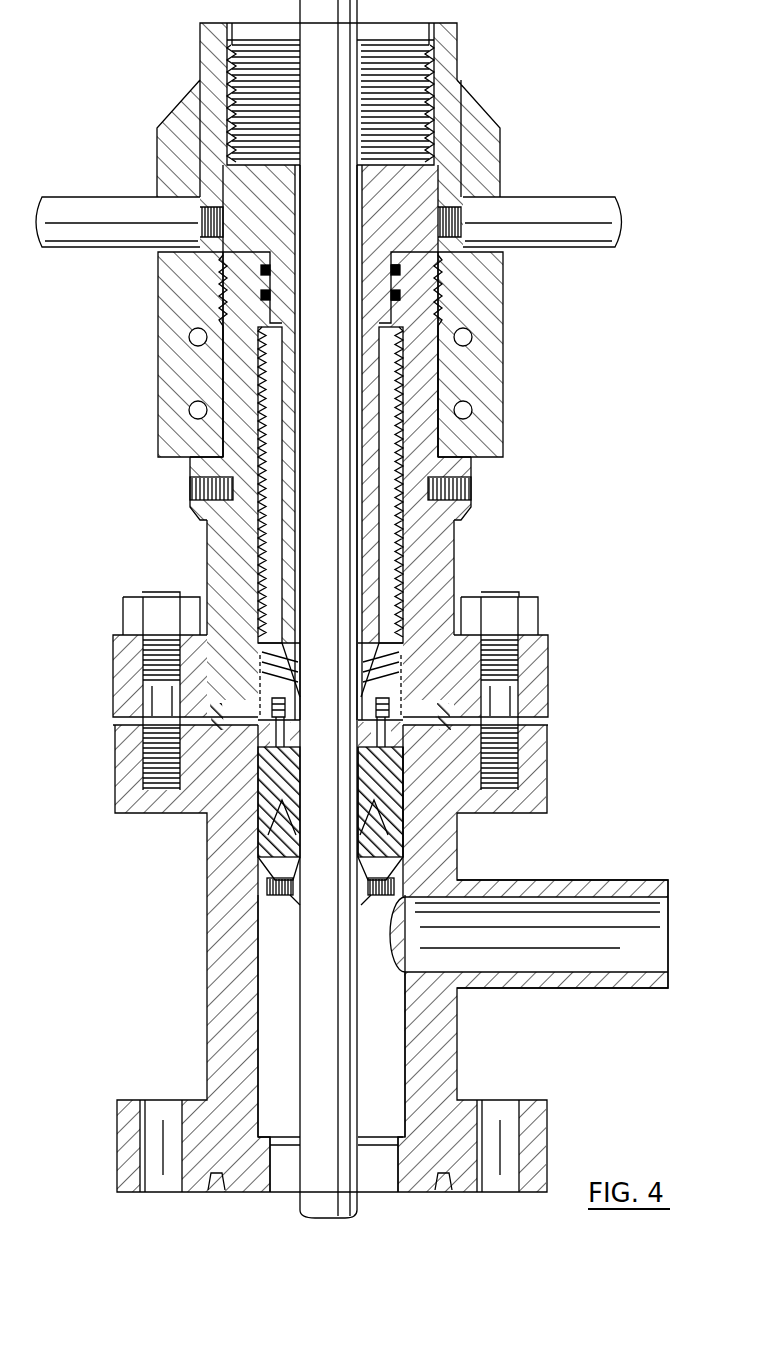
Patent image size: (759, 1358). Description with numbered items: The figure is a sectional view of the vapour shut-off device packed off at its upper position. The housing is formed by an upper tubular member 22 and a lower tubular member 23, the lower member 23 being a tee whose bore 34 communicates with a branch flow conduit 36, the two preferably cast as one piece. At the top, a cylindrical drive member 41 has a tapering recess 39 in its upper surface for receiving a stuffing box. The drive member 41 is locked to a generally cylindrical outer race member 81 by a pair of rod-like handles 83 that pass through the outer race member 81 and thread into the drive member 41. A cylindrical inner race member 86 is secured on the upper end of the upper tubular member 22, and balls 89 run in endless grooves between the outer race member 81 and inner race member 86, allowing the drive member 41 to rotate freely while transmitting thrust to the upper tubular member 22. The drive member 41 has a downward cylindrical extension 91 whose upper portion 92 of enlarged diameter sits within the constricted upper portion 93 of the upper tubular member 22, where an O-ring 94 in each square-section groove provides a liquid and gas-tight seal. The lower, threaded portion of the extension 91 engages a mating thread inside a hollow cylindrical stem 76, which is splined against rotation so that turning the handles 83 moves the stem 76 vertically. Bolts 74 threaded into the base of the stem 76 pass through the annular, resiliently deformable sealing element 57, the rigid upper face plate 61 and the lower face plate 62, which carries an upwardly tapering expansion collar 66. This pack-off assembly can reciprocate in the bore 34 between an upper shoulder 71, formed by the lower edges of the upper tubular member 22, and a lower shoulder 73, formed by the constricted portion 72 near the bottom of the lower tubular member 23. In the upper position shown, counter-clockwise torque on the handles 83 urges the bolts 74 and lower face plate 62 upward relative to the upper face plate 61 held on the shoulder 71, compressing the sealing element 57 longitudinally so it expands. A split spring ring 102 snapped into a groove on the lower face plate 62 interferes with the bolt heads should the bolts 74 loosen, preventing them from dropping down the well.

The upper tubular member 22 is at (226, 540).
The lower tubular member 23 is at (214, 976).
The bore 34 is at (276, 1022).
The flow conduit 36 is at (572, 882).
The tapering recess 39 is at (428, 58).
The drive member 41 is at (440, 68).
The sealing element 57 is at (403, 812).
The upper face plate 61 is at (250, 755).
The lower face plate 62 is at (258, 862).
The expansion collar 66 is at (393, 845).
The shoulder 71 is at (300, 718).
The constricted portion 72 is at (406, 1168).
The shoulder 73 is at (376, 1142).
The bolts 74 is at (298, 810).
The hollow cylindrical stem 76 is at (392, 695).
The outer race member 81 is at (482, 358).
The handles 83 is at (553, 205).
The inner race member 86 is at (448, 386).
The balls 89 is at (470, 412).
The cylindrical extension 91 is at (290, 482).
The upper portion of enlarged diameter 92 is at (240, 308).
The constricted upper portion 93 is at (240, 270).
The O-ring 94 is at (425, 294).
The split spring ring 102 is at (290, 905).